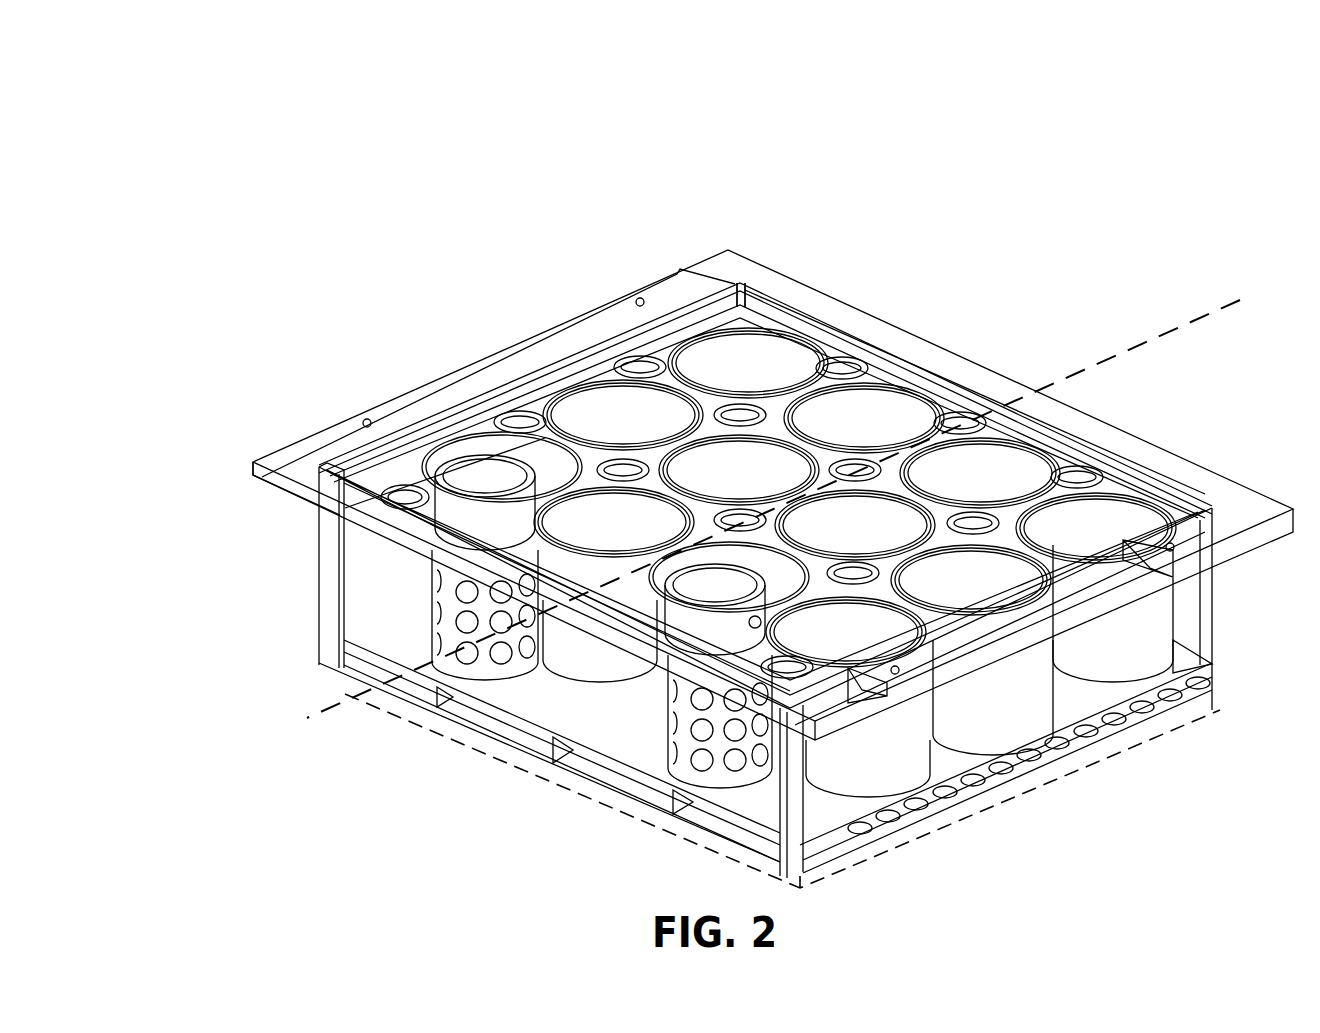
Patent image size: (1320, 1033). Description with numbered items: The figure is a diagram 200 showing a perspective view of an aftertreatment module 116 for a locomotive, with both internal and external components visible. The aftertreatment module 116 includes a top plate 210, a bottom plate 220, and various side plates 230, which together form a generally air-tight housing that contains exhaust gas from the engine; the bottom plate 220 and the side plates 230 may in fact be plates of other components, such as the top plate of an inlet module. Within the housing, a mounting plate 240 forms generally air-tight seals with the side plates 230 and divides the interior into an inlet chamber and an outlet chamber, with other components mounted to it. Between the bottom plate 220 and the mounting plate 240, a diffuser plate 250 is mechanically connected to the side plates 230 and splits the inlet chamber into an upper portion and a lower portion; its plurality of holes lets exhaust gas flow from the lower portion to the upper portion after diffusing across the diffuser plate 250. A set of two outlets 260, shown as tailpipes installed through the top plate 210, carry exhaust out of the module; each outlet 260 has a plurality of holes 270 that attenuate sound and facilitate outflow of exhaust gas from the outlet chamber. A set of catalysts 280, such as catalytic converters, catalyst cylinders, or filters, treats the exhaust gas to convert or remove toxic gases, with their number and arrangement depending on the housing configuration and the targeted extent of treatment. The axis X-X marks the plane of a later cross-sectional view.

The diagram 200 is at (205, 50).
The aftertreatment module 116 is at (418, 295).
The top plate 210 is at (258, 472).
The bottom plate 220 is at (342, 683).
The side plates 230 is at (321, 563).
The mounting plate 240 is at (617, 728).
The diffuser plate 250 is at (823, 847).
The outlets 260 is at (503, 494).
The holes 270 is at (505, 650).
The catalysts 280 is at (1115, 533).